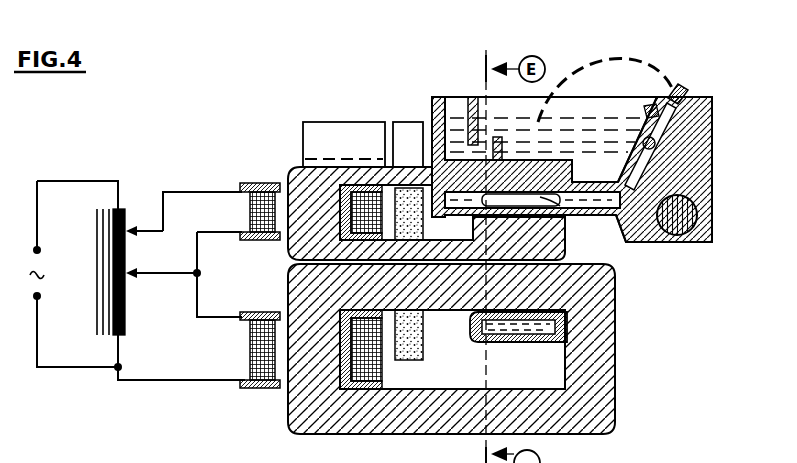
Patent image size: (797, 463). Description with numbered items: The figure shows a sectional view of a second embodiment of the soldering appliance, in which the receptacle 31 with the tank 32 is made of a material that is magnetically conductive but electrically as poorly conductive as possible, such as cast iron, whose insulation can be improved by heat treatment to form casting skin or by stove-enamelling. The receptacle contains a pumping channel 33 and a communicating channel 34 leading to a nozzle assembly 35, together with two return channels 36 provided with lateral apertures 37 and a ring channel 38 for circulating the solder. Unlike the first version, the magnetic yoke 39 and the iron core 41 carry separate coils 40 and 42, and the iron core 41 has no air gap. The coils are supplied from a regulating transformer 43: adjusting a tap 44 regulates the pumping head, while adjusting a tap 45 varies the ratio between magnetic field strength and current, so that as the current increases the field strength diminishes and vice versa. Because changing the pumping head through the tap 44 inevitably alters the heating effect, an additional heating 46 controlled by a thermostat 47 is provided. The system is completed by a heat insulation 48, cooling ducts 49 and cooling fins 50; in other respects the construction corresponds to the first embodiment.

The receptacle 31 is at (435, 163).
The tank 32 is at (593, 120).
The pumping channel 33 is at (598, 217).
The communicating channel 34 is at (680, 148).
The nozzle assembly 35 is at (674, 84).
The return channels 36 is at (453, 182).
The lateral apertures 37 is at (573, 198).
The ring channel 38 is at (543, 331).
The magnetic yoke 39 is at (301, 168).
The coil 40 is at (262, 186).
The iron core 41 is at (296, 434).
The coil 42 is at (270, 389).
The regulating transformer 43 is at (120, 209).
The tap 44 is at (156, 224).
The tap 45 is at (151, 269).
The additional heating 46 is at (677, 216).
The thermostat 47 is at (645, 139).
The heat insulation 48 is at (407, 362).
The cooling ducts 49 is at (340, 376).
The cooling fins 50 is at (338, 130).